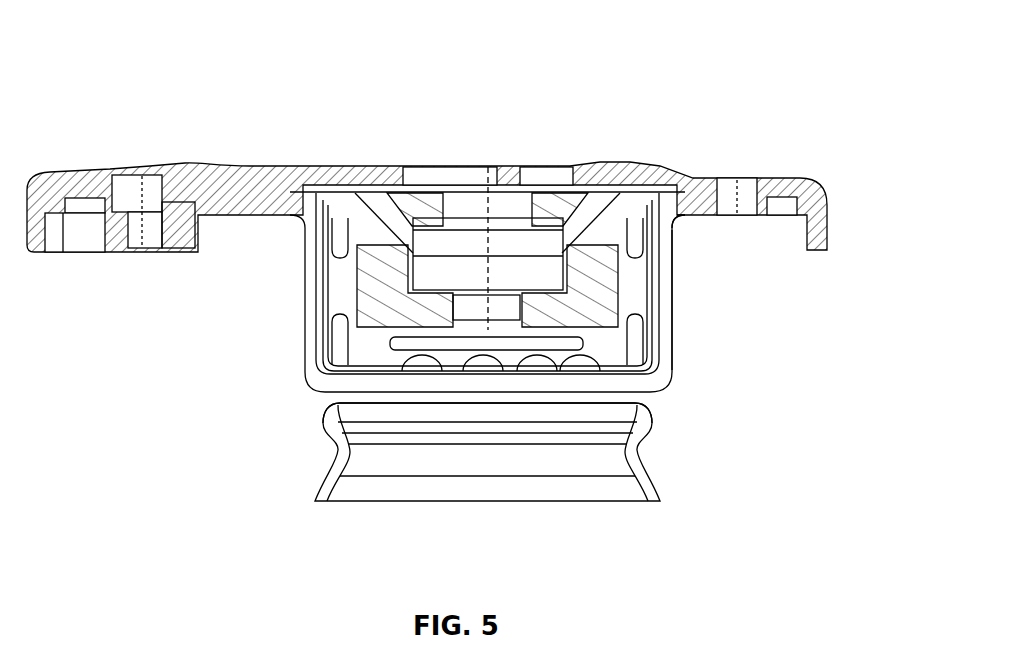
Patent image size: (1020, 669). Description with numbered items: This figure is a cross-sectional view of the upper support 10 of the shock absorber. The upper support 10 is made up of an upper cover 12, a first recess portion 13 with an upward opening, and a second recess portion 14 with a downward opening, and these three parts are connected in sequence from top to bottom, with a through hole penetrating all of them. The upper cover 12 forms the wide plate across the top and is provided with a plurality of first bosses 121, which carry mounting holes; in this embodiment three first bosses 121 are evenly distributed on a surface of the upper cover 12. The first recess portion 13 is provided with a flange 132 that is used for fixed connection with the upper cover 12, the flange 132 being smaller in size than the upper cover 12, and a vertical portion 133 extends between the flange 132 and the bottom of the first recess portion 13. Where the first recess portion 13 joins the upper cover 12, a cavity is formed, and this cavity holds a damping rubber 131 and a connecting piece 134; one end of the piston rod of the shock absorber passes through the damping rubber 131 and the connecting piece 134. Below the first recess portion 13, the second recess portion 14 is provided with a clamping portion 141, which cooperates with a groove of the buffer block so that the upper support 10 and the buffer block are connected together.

The upper support of the shock absorber 10 is at (377, 166).
The upper cover 12 is at (632, 163).
The first bosses 121 is at (185, 165).
The first recess portion 13 is at (818, 328).
The damping rubber 131 is at (330, 363).
The flange 132 is at (688, 207).
The vertical portion 133 is at (672, 320).
The connecting piece 134 is at (395, 288).
The second recess portion 14 is at (655, 435).
The clamping portion 141 is at (333, 443).